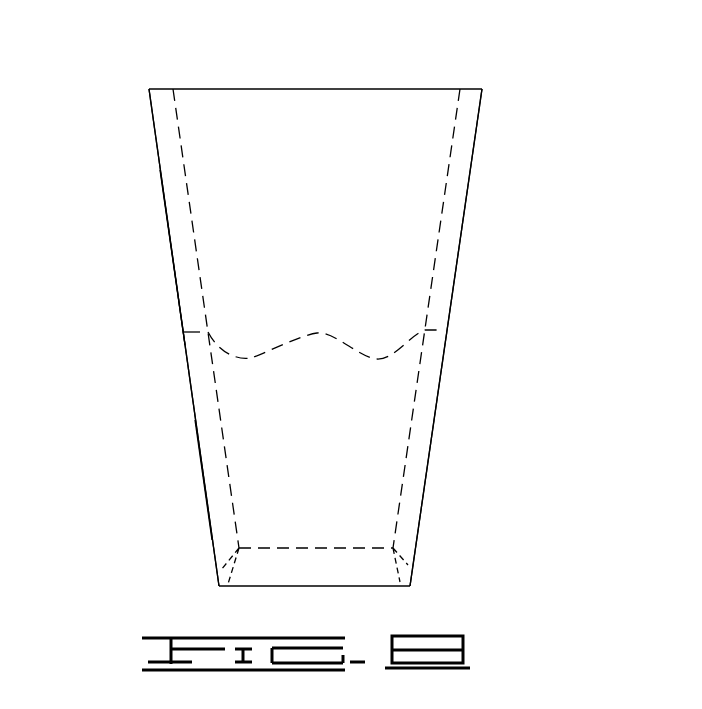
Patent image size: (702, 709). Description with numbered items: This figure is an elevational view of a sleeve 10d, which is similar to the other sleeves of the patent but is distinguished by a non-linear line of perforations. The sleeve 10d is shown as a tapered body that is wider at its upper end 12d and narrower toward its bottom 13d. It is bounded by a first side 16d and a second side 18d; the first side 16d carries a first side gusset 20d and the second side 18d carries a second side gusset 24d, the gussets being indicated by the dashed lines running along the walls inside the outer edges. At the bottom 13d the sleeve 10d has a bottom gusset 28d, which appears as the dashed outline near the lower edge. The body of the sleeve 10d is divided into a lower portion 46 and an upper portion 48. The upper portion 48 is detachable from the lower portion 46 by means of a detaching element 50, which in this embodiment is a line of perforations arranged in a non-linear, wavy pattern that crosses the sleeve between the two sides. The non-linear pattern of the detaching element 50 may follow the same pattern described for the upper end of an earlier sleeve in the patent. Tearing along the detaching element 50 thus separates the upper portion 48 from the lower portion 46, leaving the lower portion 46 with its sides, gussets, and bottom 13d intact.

The sleeve 10d is at (315, 311).
The upper end 12d is at (230, 89).
The bottom 13d is at (333, 570).
The first side 16d is at (162, 182).
The second side 18d is at (474, 155).
The first side gusset 20d is at (167, 237).
The second side gusset 24d is at (453, 300).
The bottom gusset 28d is at (402, 558).
The lower portion 46 is at (206, 482).
The upper portion 48 is at (175, 268).
The detaching element 50 is at (377, 359).